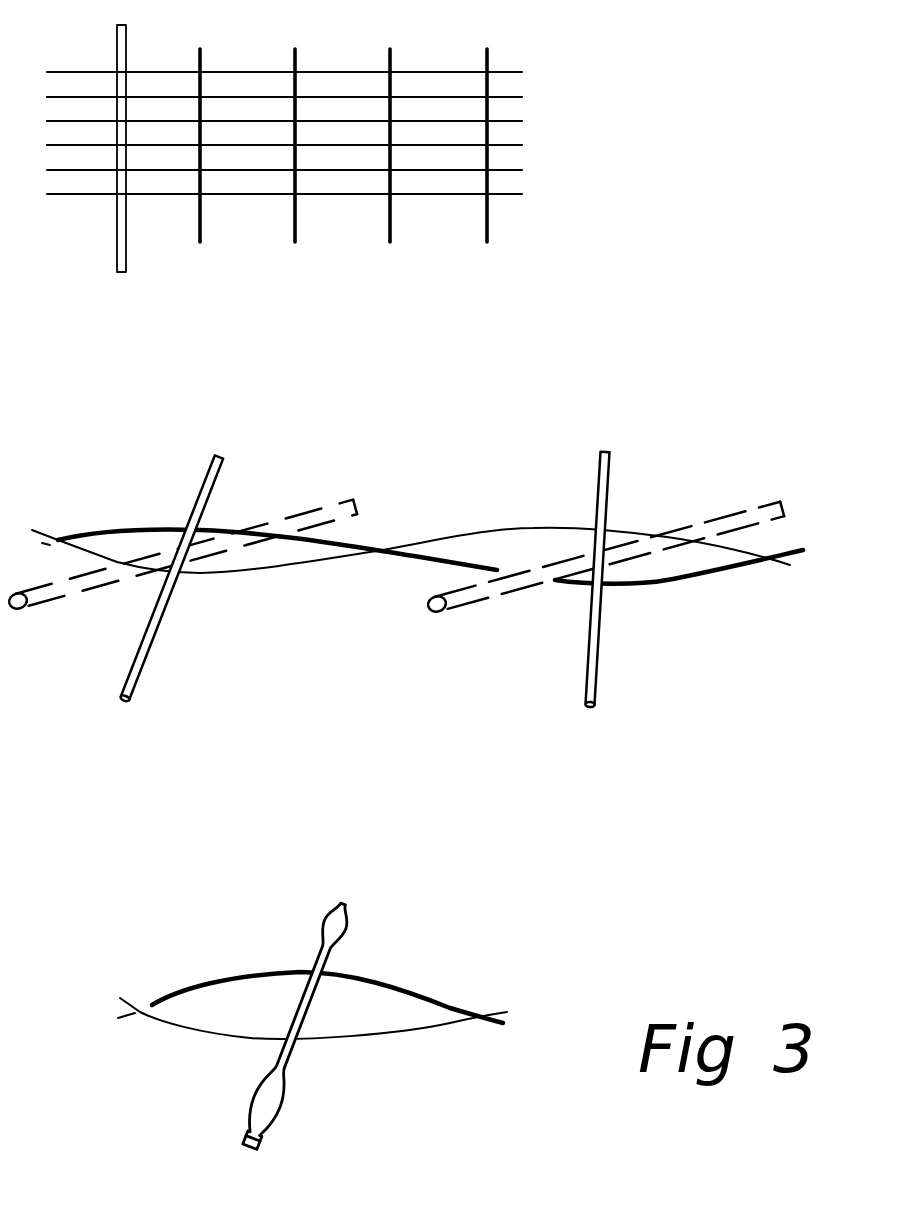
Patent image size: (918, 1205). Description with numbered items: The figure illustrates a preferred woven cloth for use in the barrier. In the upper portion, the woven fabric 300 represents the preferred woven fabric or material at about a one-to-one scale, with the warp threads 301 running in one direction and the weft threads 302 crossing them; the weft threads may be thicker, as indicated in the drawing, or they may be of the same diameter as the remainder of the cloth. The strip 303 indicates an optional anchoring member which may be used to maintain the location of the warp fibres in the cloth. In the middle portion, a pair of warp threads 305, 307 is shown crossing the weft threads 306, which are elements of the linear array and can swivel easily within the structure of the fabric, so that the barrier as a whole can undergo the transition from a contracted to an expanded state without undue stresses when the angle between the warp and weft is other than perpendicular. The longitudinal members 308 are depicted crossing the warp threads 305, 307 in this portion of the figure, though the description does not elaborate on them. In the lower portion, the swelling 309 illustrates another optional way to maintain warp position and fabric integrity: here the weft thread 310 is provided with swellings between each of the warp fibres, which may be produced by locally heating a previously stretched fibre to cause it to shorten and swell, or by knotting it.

The woven fabric 300 is at (550, 37).
The warp threads 301 is at (512, 147).
The weft threads 302 is at (485, 248).
The strip 303 is at (125, 275).
The warp thread 305 is at (72, 533).
The weft threads 306 is at (600, 466).
The warp thread 307 is at (720, 573).
The longitudinal rods 308 is at (87, 588).
The swelling 309 is at (283, 1102).
The weft thread 310 is at (320, 950).